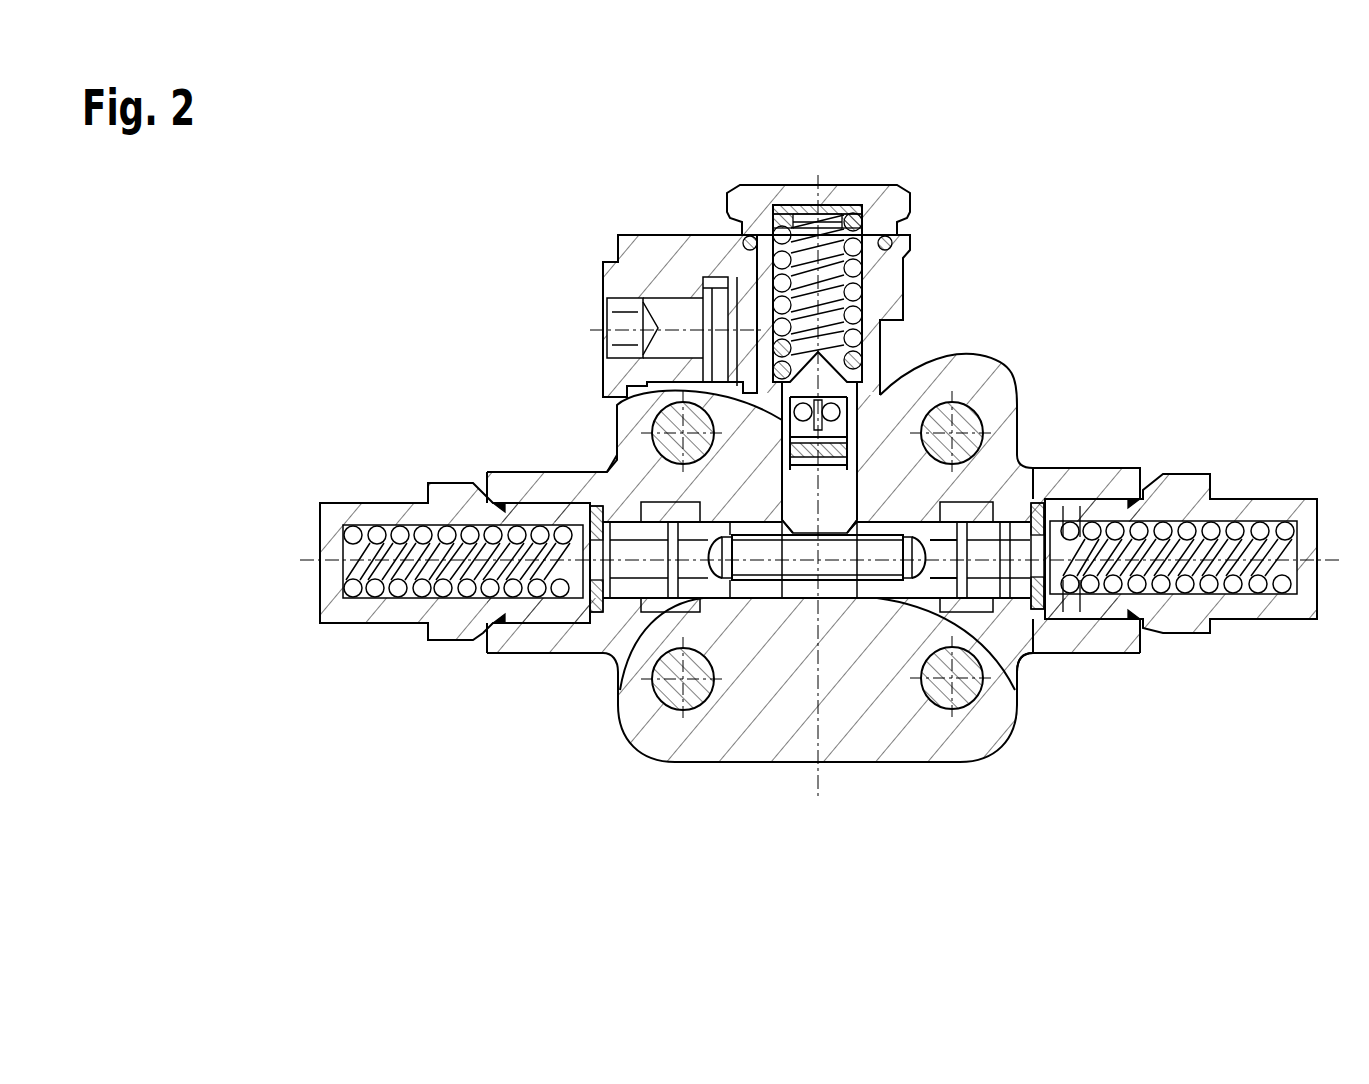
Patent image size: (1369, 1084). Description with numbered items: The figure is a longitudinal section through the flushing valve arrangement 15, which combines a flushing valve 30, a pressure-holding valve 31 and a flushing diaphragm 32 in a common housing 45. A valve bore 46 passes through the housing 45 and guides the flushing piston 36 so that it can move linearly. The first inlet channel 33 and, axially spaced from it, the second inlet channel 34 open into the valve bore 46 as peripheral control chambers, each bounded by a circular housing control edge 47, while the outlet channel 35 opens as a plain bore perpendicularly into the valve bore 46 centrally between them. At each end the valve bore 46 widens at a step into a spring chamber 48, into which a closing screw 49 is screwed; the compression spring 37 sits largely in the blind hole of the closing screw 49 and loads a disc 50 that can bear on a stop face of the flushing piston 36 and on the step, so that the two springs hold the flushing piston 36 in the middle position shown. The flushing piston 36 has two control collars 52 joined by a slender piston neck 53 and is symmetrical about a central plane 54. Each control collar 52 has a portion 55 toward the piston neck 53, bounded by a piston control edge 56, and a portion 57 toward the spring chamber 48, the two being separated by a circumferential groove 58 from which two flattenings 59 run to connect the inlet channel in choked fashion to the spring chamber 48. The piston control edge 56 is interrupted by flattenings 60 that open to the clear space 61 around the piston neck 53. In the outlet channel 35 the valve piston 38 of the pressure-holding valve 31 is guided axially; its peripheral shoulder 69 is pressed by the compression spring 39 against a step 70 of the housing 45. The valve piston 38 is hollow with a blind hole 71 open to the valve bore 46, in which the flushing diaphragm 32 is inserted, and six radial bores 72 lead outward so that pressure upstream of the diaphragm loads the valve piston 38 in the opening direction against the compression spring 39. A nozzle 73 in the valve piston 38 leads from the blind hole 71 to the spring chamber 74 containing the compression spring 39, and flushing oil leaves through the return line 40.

The flushing valve arrangement 15 is at (1080, 762).
The flushing valve 30 is at (1030, 663).
The pressure-holding valve 31 is at (885, 395).
The flushing diaphragm 32 is at (990, 366).
The first inlet channel 33 is at (640, 642).
The second inlet channel 34 is at (1045, 480).
The outlet channel 35 is at (779, 570).
The flushing piston 36 is at (1023, 470).
The compression spring 37 is at (388, 624).
The valve piston 38 is at (790, 425).
The compression spring 39 is at (790, 232).
The return line 40 is at (718, 300).
The housing 45 is at (650, 735).
The valve bore 46 is at (848, 584).
The housing control edge 47 is at (658, 615).
The spring chamber 48 is at (1150, 478).
The closing screw 49 is at (343, 624).
The disc 50 is at (1085, 480).
The control collar 52 is at (710, 584).
The piston neck 53 is at (756, 590).
The plane 54 is at (836, 765).
The portion 55 is at (925, 600).
The piston control edge 56 is at (900, 590).
The portion 57 is at (1012, 612).
The circumferential groove 58 is at (1003, 600).
The flattening 59 is at (1030, 643).
The flattening 60 is at (725, 585).
The clear space 61 is at (808, 515).
The peripheral shoulder 69 is at (776, 353).
The step 70 is at (786, 404).
The blind hole 71 is at (789, 436).
The radial bore 72 is at (890, 378).
The nozzle 73 is at (870, 352).
The spring chamber 74 is at (896, 258).